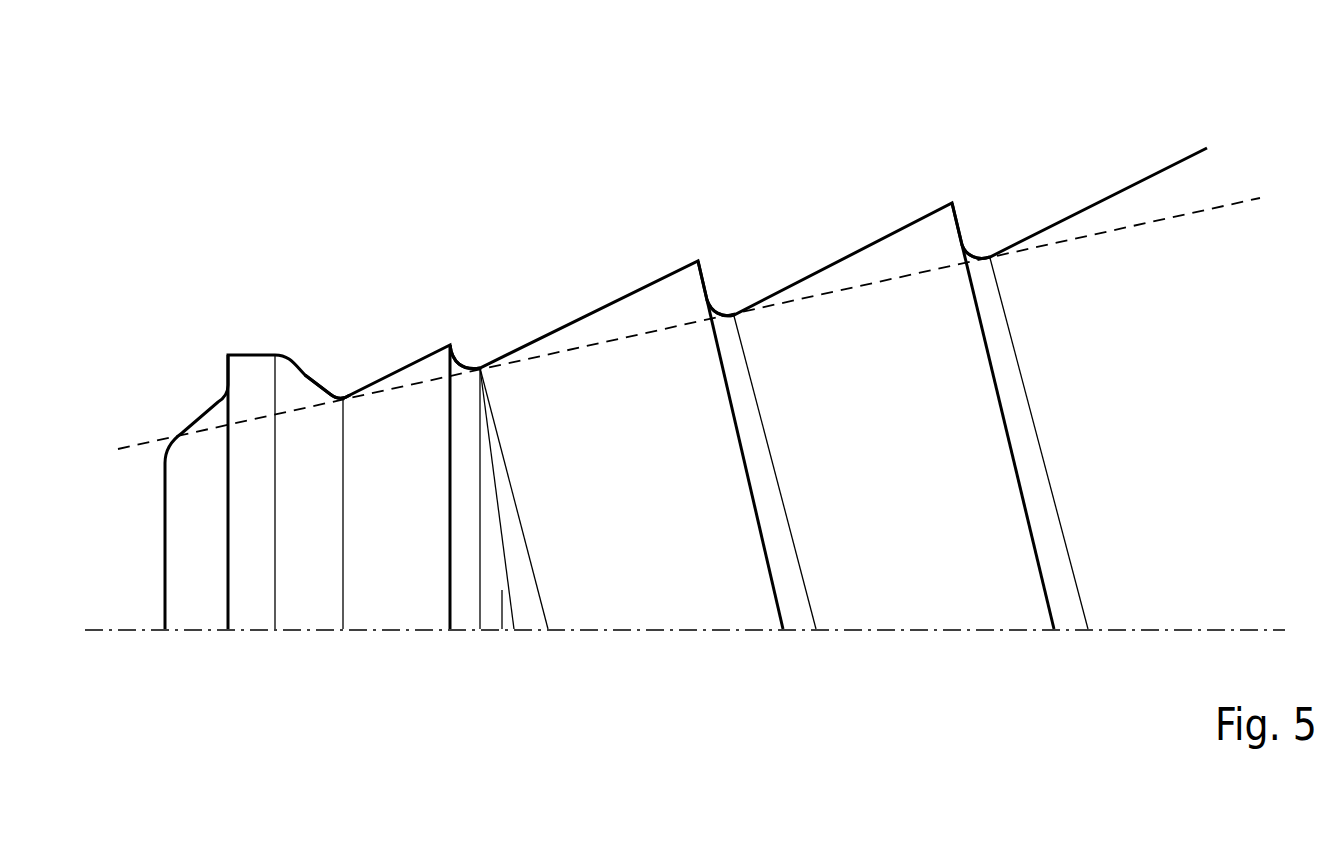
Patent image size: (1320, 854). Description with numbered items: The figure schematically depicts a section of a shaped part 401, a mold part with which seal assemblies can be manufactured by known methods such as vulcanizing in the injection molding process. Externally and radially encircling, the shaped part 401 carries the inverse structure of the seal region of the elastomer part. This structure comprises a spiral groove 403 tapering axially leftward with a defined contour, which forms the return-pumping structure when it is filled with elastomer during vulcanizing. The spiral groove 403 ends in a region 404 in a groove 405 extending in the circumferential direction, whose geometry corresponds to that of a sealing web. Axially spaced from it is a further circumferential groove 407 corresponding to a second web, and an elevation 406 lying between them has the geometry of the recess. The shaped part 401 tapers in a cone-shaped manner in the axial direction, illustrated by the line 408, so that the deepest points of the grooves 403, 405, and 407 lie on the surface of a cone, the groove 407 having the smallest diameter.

The shaped part 401 is at (633, 203).
The spiral groove 403 is at (993, 247).
The region 404 is at (508, 545).
The groove extending in the circumferential direction 405 is at (478, 350).
The elevation 406 is at (448, 345).
The further groove extending in the circumferential direction 407 is at (342, 393).
The line 408 is at (1228, 205).